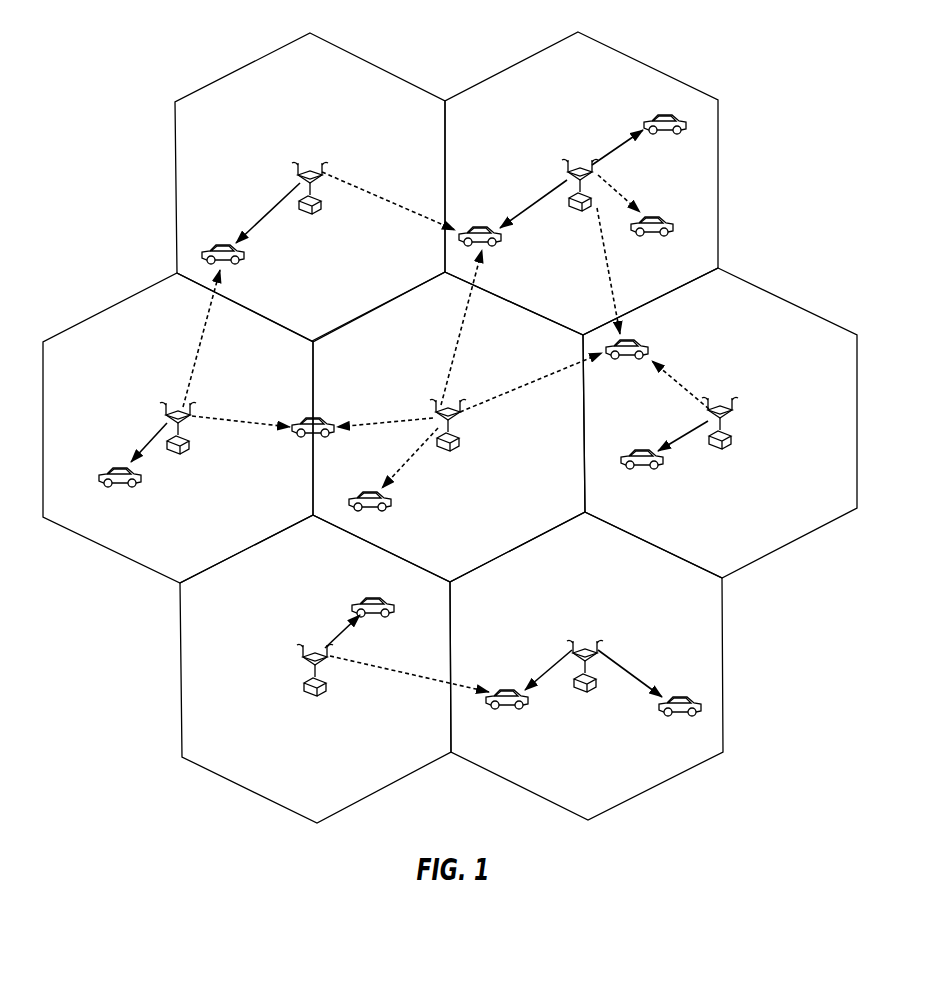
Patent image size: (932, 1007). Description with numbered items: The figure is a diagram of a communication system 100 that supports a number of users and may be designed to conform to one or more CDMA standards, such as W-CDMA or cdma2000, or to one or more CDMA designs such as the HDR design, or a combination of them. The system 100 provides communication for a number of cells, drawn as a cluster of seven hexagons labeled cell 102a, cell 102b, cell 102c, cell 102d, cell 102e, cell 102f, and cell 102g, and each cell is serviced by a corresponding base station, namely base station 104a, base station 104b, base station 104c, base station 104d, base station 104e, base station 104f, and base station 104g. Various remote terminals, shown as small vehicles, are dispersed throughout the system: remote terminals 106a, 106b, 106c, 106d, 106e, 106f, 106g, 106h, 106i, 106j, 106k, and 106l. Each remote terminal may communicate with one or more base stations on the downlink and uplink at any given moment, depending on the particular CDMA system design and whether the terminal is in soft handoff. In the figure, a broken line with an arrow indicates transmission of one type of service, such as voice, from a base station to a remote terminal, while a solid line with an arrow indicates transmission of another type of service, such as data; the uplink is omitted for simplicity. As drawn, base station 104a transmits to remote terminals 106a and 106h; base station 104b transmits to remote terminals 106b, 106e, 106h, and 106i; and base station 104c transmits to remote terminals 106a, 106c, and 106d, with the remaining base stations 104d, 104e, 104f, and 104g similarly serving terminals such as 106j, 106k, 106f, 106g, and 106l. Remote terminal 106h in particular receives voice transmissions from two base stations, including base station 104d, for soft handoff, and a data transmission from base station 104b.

The communication system 100 is at (853, 128).
The cell 102a is at (252, 64).
The cell 102b is at (652, 65).
The cell 102c is at (114, 305).
The cell 102d is at (466, 300).
The cell 102e is at (788, 299).
The cell 102f is at (176, 679).
The cell 102g is at (726, 668).
The base station 104a is at (306, 168).
The base station 104b is at (578, 165).
The base station 104c is at (166, 410).
The base station 104d is at (462, 420).
The base station 104e is at (730, 401).
The base station 104f is at (314, 648).
The base station 104g is at (584, 645).
The remote terminal 106a is at (246, 252).
The remote terminal 106b is at (660, 219).
The remote terminal 106c is at (112, 466).
The remote terminal 106d is at (324, 419).
The remote terminal 106e is at (642, 344).
The remote terminal 106f is at (366, 598).
The remote terminal 106g is at (500, 690).
The remote terminal 106h is at (482, 227).
The remote terminal 106i is at (660, 115).
The remote terminal 106j is at (358, 492).
The remote terminal 106k is at (635, 450).
The remote terminal 106l is at (679, 697).